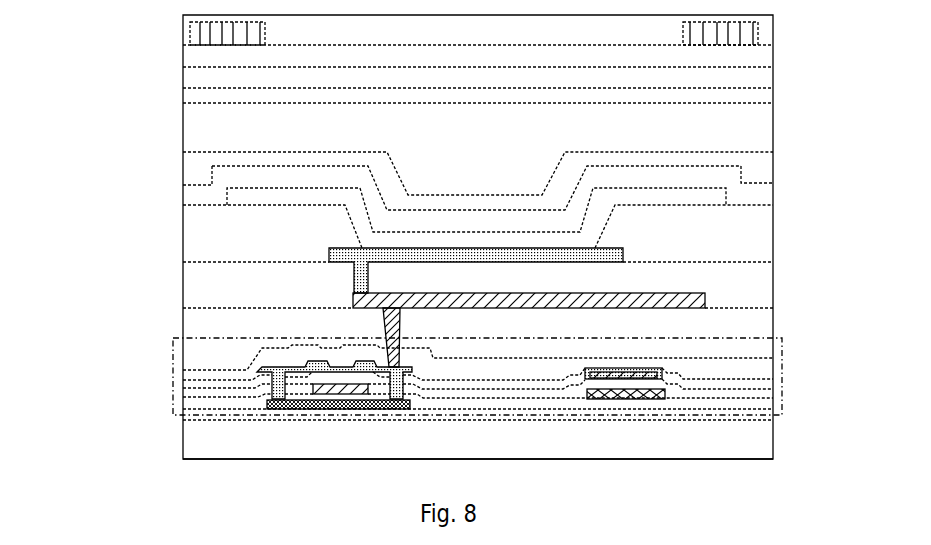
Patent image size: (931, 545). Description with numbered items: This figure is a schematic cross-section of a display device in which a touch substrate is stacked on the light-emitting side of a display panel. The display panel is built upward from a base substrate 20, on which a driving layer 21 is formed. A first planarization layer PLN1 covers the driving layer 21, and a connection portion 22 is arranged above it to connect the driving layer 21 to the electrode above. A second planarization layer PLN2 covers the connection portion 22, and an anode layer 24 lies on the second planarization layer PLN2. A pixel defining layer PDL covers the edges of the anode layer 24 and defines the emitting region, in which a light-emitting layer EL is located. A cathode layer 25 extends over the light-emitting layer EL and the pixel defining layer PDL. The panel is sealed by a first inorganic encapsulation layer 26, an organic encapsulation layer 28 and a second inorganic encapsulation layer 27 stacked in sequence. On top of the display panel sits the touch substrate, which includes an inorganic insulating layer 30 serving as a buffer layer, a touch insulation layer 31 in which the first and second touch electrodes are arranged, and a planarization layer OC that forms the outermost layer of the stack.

The planarization layer OC is at (768, 19).
The touch insulation layer 31 is at (762, 54).
The inorganic insulating layer 30 is at (194, 78).
The second inorganic encapsulation layer 27 is at (762, 97).
The organic encapsulation layer 28 is at (194, 128).
The first inorganic encapsulation layer 26 is at (762, 163).
The cathode layer 25 is at (762, 195).
The light-emitting layer EL is at (227, 197).
The pixel defining layer PDL is at (195, 249).
The anode layer 24 is at (623, 256).
The second planarization layer PLN2 is at (195, 290).
The connection portion 22 is at (705, 300).
The first planarization layer PLN1 is at (195, 325).
The driving layer 21 is at (783, 380).
The base substrate 20 is at (767, 447).